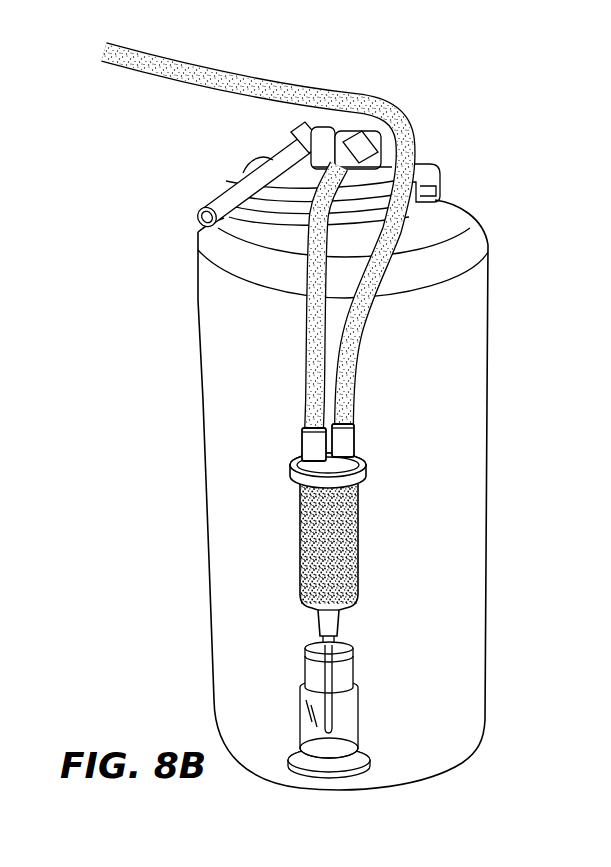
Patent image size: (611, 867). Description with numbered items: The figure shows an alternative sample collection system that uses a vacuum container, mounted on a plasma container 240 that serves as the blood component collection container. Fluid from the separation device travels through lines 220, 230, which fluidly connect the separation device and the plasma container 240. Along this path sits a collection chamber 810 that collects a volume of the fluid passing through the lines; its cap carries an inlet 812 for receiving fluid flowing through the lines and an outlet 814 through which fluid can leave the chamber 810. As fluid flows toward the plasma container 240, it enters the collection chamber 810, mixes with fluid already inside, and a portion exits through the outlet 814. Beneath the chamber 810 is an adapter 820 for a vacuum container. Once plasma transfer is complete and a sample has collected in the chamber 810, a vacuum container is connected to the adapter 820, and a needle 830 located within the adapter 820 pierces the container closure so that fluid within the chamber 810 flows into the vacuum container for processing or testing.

The tubing 220 is at (336, 365).
The line 230 is at (356, 362).
The plasma container 240 is at (446, 308).
The collection chamber 810 is at (301, 520).
The inlet 812 is at (326, 440).
The outlet 814 is at (303, 440).
The adapter 820 is at (352, 723).
The needle 830 is at (326, 681).